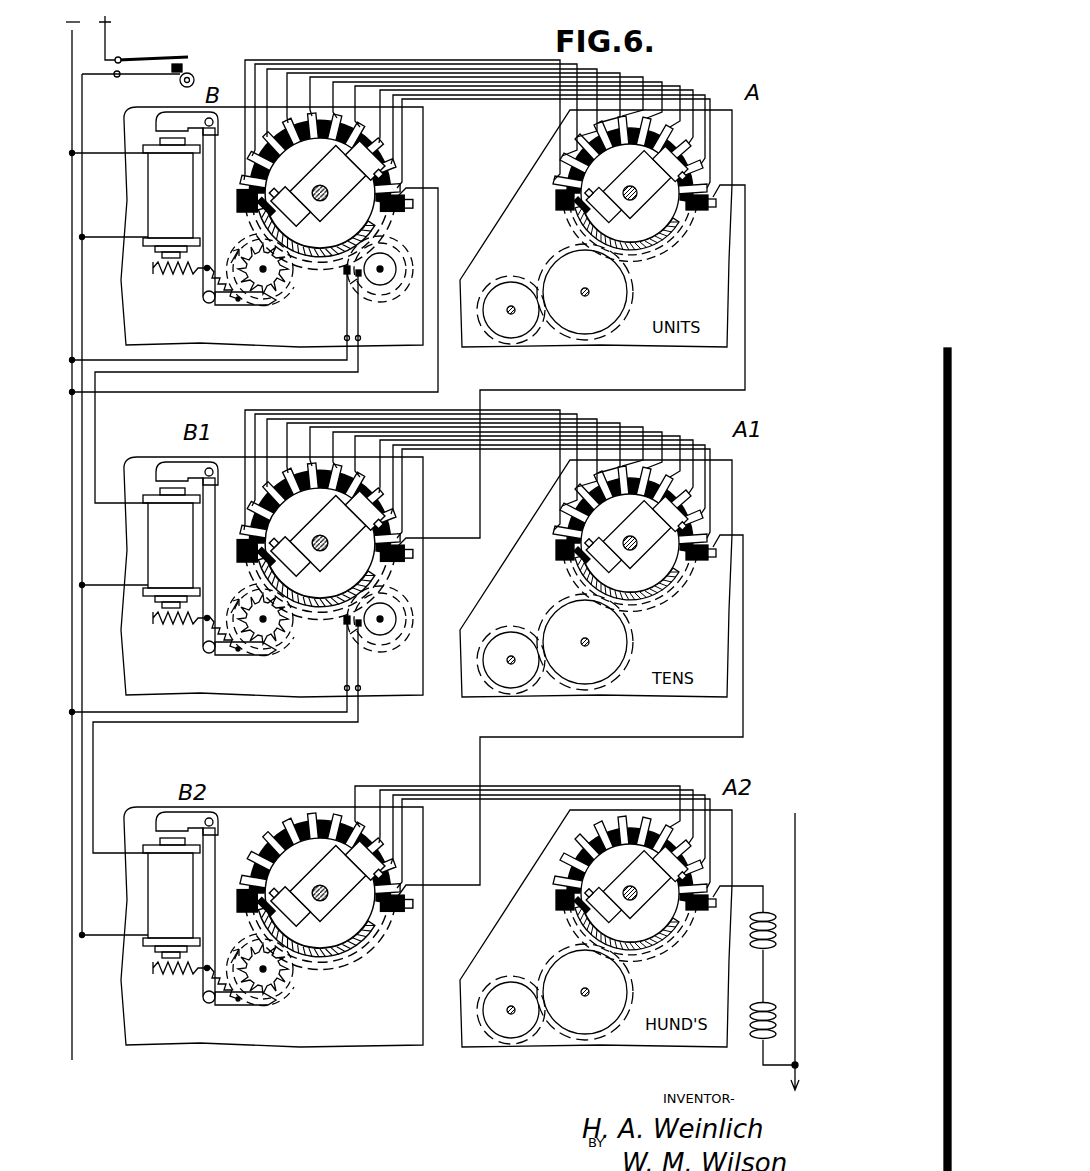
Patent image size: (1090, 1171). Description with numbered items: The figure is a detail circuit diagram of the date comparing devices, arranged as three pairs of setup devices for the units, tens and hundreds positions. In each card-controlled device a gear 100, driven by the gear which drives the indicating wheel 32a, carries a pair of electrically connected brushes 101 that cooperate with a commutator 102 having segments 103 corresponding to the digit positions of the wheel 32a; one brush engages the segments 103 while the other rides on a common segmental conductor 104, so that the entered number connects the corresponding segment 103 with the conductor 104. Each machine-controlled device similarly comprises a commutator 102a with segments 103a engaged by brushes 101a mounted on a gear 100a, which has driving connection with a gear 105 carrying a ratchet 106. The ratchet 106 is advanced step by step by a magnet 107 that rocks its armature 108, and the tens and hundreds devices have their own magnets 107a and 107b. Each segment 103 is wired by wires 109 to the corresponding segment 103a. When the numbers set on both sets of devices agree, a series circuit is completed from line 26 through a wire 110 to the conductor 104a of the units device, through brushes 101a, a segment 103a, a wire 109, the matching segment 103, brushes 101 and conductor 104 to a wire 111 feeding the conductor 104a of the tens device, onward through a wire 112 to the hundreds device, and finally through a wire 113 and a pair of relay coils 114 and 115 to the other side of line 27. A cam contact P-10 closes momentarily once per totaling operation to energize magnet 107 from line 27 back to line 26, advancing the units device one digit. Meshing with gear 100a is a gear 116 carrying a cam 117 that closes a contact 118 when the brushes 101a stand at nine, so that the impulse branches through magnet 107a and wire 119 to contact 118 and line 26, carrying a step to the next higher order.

The line 26 is at (70, 386).
The line 27 is at (105, 40).
The cam contact P-10 is at (192, 74).
The indicating wheel 32a is at (512, 276).
The gear 100 is at (650, 248).
The gear 100a is at (395, 236).
The brushes 101 is at (618, 230).
The brushes 101a is at (312, 202).
The commutator 102 is at (718, 190).
The commutator 102a is at (402, 190).
The segments 103 is at (680, 130).
The segments 103a is at (312, 125).
The common segmental conductor 104 is at (668, 228).
The conductor 104a is at (328, 252).
The gear 105 is at (279, 304).
The ratchet 106 is at (257, 252).
The magnet 107 is at (160, 215).
The magnet 107a is at (152, 557).
The magnet 107b is at (153, 900).
The armature 108 is at (206, 262).
The wires 109 is at (470, 92).
The wire 110 is at (406, 374).
The wire 111 is at (736, 370).
The wire 112 is at (745, 724).
The wire 113 is at (765, 878).
The relay coil 114 is at (760, 942).
The relay coil 115 is at (757, 1028).
The gear 116 is at (400, 302).
The cam 117 is at (385, 268).
The contact 118 is at (350, 290).
The wire 119 is at (240, 372).